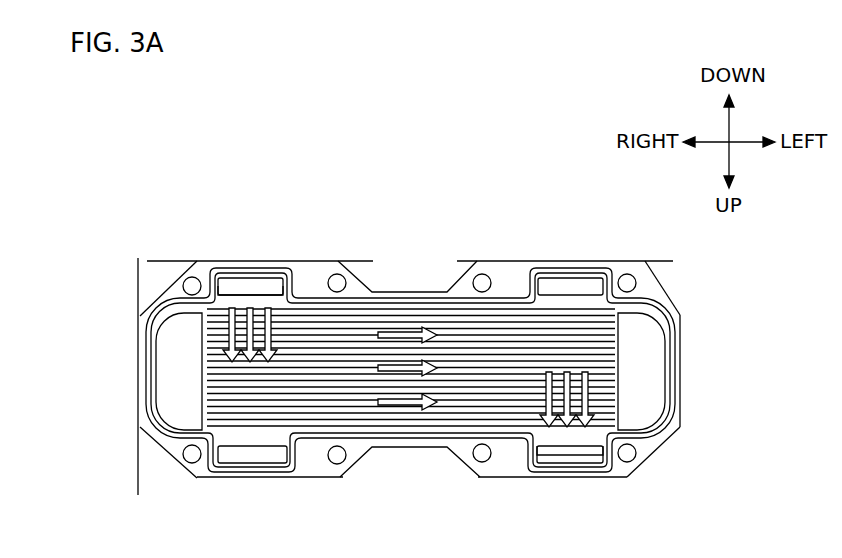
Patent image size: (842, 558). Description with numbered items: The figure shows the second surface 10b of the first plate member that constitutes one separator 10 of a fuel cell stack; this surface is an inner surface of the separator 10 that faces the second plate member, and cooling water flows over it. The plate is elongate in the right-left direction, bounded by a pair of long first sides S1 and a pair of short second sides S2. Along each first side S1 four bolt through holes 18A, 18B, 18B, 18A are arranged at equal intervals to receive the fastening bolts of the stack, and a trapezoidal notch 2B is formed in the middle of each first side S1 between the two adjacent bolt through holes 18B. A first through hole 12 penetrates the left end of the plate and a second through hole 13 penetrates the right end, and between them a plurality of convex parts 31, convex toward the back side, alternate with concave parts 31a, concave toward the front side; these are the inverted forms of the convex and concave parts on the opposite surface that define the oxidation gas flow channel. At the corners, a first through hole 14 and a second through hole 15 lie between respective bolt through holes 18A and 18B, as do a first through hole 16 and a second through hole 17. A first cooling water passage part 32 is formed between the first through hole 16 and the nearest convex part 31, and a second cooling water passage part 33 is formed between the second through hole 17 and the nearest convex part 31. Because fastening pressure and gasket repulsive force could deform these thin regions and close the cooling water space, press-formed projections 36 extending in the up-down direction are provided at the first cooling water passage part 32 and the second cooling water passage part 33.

The separator 10 is at (386, 193).
The second surface 10b is at (665, 295).
The first through hole 12 is at (653, 408).
The second through hole 13 is at (183, 407).
The first through hole 14 is at (572, 285).
The second through hole 15 is at (258, 452).
The first through hole 16 is at (240, 276).
The second through hole 17 is at (575, 455).
The bolt through hole 18A is at (197, 268).
The bolt through hole 18B is at (337, 274).
The trapezoidal notch 2B is at (462, 280).
The convex part 31 is at (300, 412).
The concave part 31a is at (370, 408).
The first cooling water passage part 32 is at (220, 270).
The second cooling water passage part 33 is at (588, 460).
The projection 36 is at (266, 305).
The first side S1 is at (152, 261).
The second side S2 is at (138, 482).